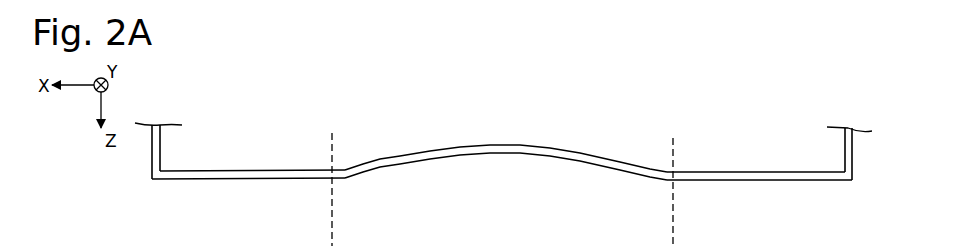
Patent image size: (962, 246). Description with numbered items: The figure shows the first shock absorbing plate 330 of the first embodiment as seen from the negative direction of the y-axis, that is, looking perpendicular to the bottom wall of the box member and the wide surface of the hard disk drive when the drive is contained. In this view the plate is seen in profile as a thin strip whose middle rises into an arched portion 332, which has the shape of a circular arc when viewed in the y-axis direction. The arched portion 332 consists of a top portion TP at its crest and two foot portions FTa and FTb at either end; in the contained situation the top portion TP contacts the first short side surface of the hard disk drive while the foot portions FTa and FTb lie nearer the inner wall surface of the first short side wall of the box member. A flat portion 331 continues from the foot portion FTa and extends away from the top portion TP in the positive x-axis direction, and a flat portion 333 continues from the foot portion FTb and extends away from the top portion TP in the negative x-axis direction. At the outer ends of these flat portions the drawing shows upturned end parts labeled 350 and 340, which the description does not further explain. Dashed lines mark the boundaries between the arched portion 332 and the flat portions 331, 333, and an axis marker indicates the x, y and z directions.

The first shock absorbing plate 330 is at (492, 170).
The flat portion 331 is at (277, 179).
The arched portion 332 is at (455, 153).
The flat portion 333 is at (710, 183).
The right side wall 340 is at (853, 148).
The left side wall 350 is at (153, 152).
The foot portion FTa is at (365, 162).
The top portion TP is at (500, 146).
The foot portion FTb is at (620, 163).